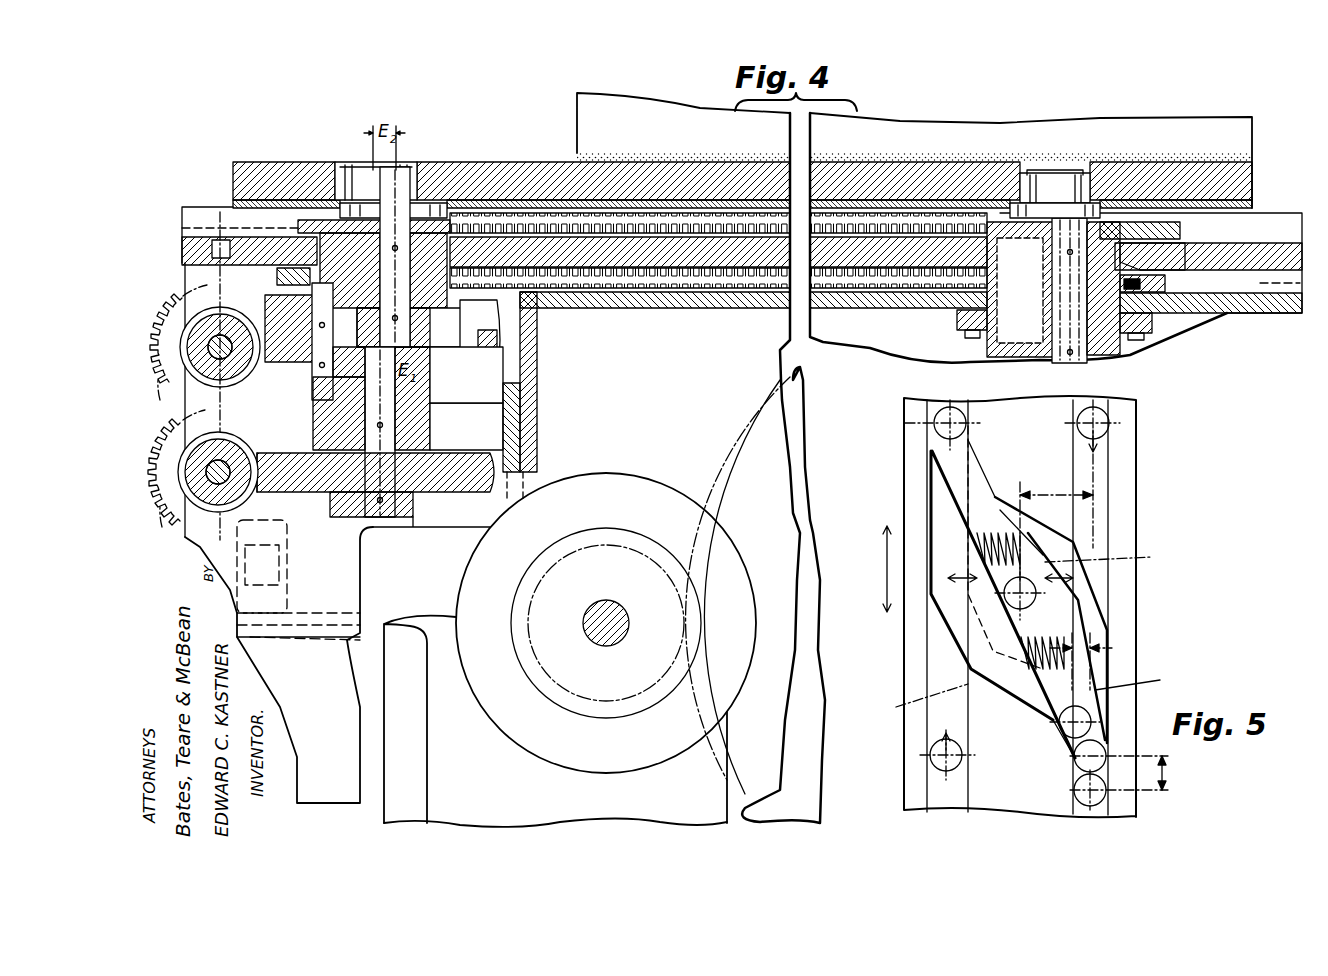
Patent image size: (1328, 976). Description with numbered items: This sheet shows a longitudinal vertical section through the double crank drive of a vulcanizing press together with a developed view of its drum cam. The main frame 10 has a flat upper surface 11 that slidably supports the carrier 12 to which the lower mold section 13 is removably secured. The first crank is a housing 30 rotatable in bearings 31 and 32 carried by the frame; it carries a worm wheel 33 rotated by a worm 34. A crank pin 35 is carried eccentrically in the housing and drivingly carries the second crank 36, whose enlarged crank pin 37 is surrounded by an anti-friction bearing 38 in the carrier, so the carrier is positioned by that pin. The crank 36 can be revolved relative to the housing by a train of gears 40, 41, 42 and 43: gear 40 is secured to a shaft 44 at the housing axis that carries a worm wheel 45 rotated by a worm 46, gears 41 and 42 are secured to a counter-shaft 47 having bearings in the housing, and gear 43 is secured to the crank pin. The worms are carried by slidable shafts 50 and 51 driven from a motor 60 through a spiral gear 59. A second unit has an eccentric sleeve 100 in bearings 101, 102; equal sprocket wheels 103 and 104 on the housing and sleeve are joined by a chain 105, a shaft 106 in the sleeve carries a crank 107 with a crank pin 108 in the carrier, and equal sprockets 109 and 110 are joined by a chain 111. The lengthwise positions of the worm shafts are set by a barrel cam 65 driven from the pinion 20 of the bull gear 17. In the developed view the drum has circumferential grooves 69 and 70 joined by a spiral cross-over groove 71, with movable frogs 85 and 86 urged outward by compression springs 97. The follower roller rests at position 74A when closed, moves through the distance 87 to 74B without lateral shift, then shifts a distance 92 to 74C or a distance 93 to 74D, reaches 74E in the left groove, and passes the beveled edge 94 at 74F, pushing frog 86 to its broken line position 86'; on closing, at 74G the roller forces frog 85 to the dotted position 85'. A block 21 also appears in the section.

In FIG. 4, the main frame 10 is at (1265, 313).
In FIG. 4, the flat upper surface 11 is at (185, 207).
In FIG. 4, the plate or carrier 12 is at (233, 172).
In FIG. 4, the lower mold section 13 is at (1178, 130).
In FIG. 4, the bull gear 17 is at (690, 727).
In FIG. 4, the pinion 20 is at (605, 720).
In FIG. 4, the block 21 is at (555, 721).
In FIG. 4, the housing 30 is at (453, 397).
In FIG. 4, the bearing 31 is at (433, 428).
In FIG. 4, the bearing 32 is at (285, 237).
In FIG. 4, the worm wheel 33 is at (497, 355).
In FIG. 4, the worm 34 is at (220, 347).
In FIG. 4, the crank pin 35 is at (455, 310).
In FIG. 4, the second crank 36 is at (420, 210).
In FIG. 4, the enlarged crank pin 37 is at (385, 185).
In FIG. 4, the anti-friction bearing 38 is at (350, 185).
In FIG. 4, the gear 40 is at (471, 372).
In FIG. 4, the gear 41 is at (253, 362).
In FIG. 4, the gear 42 is at (272, 318).
In FIG. 4, the gear 43 is at (415, 328).
In FIG. 4, the shaft 44 is at (351, 518).
In FIG. 4, the worm wheel 45 is at (315, 506).
In FIG. 4, the worm 46 is at (218, 472).
In FIG. 4, the counter-shaft 47 is at (312, 400).
In FIG. 4, the elongated shaft 50 is at (220, 347).
In FIG. 4, the elongated shaft 51 is at (218, 472).
In FIG. 4, the spiral gear 59 is at (283, 453).
In FIG. 4, the motor 60 is at (279, 661).
In FIG. 5, the barrel cam 65 is at (1137, 428).
In FIG. 5, the circumferential groove 69 is at (1110, 515).
In FIG. 5, the circumferential groove 70 is at (935, 795).
In FIG. 5, the spiral cross-over groove 71 is at (1090, 607).
In FIG. 5, the roller position 74A is at (1100, 797).
In FIG. 5, the roller position 74B is at (1078, 758).
In FIG. 5, the roller position 74C is at (1065, 730).
In FIG. 5, the roller position 74D is at (1015, 608).
In FIG. 5, the roller position 74E is at (920, 425).
In FIG. 5, the roller position 74F is at (930, 760).
In FIG. 5, the roller position 74G is at (1078, 427).
In FIG. 5, the frog 85 is at (1137, 680).
In FIG. 5, the dotted line position of frog 85' is at (1113, 556).
In FIG. 5, the frog 86 is at (970, 604).
In FIG. 5, the broken line position of frog 86' is at (916, 702).
In FIG. 5, the distance 87 is at (1184, 773).
In FIG. 5, the distance 92 is at (1112, 648).
In FIG. 5, the distance 93 is at (1063, 480).
In FIG. 5, the beveled edge 94 is at (950, 666).
In FIG. 5, the compression spring 97 is at (980, 540).
In FIG. 4, the eccentric sleeve 100 is at (1045, 360).
In FIG. 4, the bearing 101 is at (1135, 342).
In FIG. 4, the bearing 102 is at (1183, 258).
In FIG. 4, the sprocket wheel 103 is at (277, 275).
In FIG. 4, the sprocket wheel 104 is at (1165, 285).
In FIG. 4, the chain 105 is at (597, 283).
In FIG. 4, the shaft 106 is at (1070, 363).
In FIG. 4, the crank 107 is at (1098, 212).
In FIG. 4, the crank pin 108 is at (1050, 185).
In FIG. 4, the sprocket 109 is at (298, 226).
In FIG. 4, the sprocket 110 is at (1180, 230).
In FIG. 4, the chain 111 is at (565, 220).